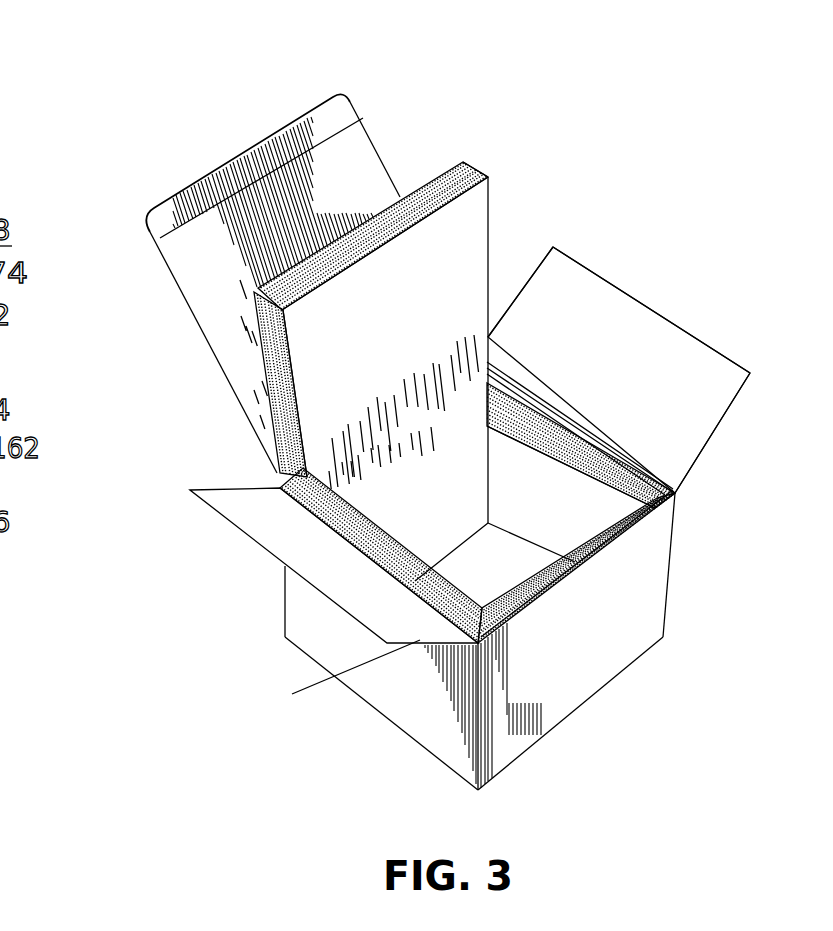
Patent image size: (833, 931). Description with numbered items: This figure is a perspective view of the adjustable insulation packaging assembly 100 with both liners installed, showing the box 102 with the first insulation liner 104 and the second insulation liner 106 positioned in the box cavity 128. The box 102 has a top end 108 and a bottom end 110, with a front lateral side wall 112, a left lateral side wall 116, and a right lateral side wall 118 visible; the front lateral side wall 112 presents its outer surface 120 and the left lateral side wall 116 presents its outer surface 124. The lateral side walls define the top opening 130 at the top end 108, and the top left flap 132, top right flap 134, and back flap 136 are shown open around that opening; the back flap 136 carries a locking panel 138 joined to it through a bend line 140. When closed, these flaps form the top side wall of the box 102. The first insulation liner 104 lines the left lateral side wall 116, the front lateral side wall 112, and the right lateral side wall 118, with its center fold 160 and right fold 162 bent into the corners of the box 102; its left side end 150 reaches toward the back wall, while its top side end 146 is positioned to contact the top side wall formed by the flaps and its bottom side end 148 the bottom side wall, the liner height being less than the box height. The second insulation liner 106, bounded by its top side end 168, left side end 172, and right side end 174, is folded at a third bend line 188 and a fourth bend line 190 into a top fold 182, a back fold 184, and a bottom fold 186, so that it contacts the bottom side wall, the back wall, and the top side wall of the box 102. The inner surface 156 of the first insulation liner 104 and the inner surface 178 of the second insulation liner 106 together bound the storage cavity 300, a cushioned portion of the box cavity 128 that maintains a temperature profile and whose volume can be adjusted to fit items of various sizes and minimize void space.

The adjustable insulation packaging assembly 100 is at (98, 220).
The box 102 is at (232, 178).
The first insulation liner 104 is at (645, 483).
The second insulation liner 106 is at (462, 245).
The top end 108 is at (512, 622).
The bottom end 110 is at (350, 690).
The front lateral side wall 112 is at (553, 700).
The left lateral side wall 116 is at (407, 713).
The right lateral side wall 118 is at (633, 482).
The outer surface 120 is at (540, 723).
The outer surface 124 is at (427, 727).
The box cavity 128 is at (320, 568).
The top opening 130 is at (495, 645).
The top left flap 132 is at (300, 560).
The top right flap 134 is at (615, 337).
The back flap 136 is at (202, 282).
The locking panel 138 is at (285, 148).
The bend line 140 is at (347, 100).
The top side end 146 is at (650, 517).
The bottom side end 148 is at (583, 567).
The left side end 150 is at (268, 470).
The inner surface 156 is at (560, 485).
The center fold 160 is at (598, 537).
The right fold 162 is at (507, 470).
The top side end 168 is at (447, 165).
The left side end 172 is at (265, 447).
The right side end 174 is at (490, 197).
The inner surface 178 is at (430, 190).
The top fold 182 is at (465, 210).
The back fold 184 is at (452, 472).
The bottom fold 186 is at (538, 600).
The third bend line 188 is at (457, 383).
The fourth bend line 190 is at (331, 675).
The storage cavity 300 is at (590, 503).